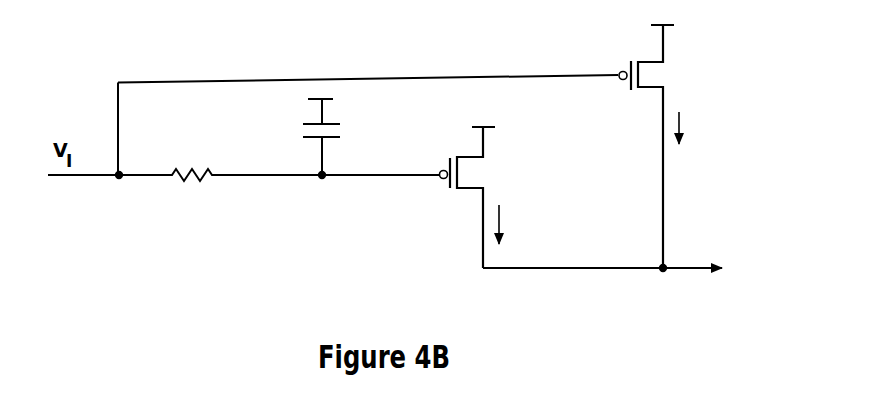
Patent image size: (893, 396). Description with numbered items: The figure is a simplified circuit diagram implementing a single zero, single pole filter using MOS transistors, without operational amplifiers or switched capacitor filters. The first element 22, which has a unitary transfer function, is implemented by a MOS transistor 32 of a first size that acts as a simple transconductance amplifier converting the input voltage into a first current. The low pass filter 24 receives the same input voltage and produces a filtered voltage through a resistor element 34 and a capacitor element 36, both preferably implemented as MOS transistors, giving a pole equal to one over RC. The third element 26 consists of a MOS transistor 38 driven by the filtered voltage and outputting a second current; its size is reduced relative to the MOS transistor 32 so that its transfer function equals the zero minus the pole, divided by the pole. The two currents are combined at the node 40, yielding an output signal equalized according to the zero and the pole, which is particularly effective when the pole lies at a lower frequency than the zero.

The first element 22 is at (736, 79).
The low pass filter 24 is at (290, 212).
The third element 26 is at (416, 223).
The MOS transistor 32 is at (675, 66).
The resistor element 34 is at (194, 186).
The capacitor element 36 is at (298, 129).
The MOS transistor 38 is at (499, 164).
The node 40 is at (663, 272).